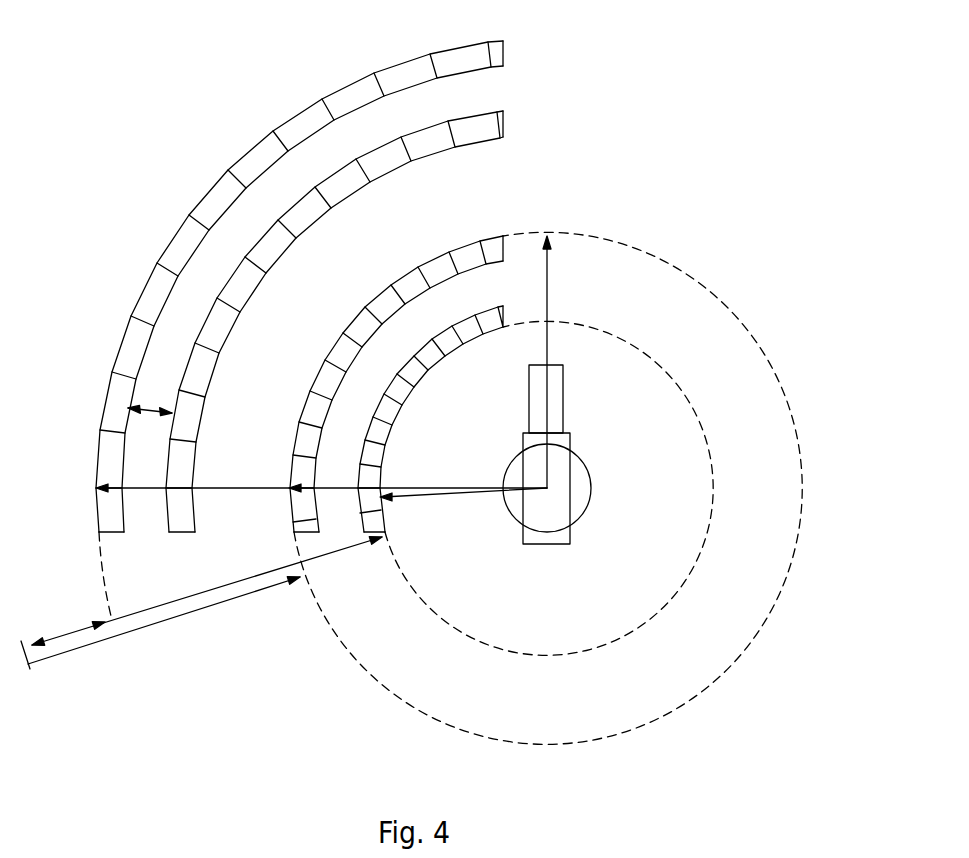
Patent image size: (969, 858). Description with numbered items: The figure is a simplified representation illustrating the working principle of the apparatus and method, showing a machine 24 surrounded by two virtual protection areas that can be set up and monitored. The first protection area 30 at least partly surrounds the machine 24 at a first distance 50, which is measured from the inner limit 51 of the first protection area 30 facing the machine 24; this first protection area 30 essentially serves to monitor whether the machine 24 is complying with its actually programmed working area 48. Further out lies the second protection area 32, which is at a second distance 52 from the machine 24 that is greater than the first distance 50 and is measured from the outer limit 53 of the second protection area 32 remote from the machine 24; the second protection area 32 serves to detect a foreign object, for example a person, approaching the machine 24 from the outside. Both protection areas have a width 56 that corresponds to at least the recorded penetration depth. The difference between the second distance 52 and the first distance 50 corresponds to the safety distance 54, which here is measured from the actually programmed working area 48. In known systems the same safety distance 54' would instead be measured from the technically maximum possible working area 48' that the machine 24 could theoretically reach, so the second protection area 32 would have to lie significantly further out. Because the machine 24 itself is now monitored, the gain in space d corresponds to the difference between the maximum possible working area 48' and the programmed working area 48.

The machine 24 is at (555, 475).
The first protection area 30 is at (408, 347).
The second protection area 32 is at (288, 197).
The working area 48 is at (549, 488).
The maximum possible working area 48' is at (548, 513).
The first distance 50 is at (416, 497).
The inner limit 51 is at (385, 434).
The second distance 52 is at (240, 488).
The outer limit 53 is at (102, 408).
The safety distance 54 is at (207, 591).
The safety distance 54' is at (164, 620).
The width 56 is at (155, 405).
The gain in space d is at (63, 635).